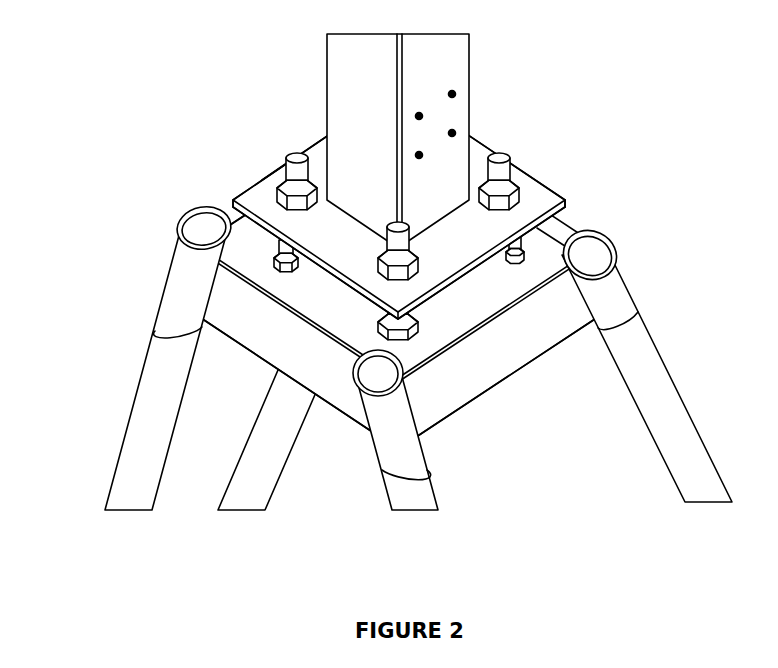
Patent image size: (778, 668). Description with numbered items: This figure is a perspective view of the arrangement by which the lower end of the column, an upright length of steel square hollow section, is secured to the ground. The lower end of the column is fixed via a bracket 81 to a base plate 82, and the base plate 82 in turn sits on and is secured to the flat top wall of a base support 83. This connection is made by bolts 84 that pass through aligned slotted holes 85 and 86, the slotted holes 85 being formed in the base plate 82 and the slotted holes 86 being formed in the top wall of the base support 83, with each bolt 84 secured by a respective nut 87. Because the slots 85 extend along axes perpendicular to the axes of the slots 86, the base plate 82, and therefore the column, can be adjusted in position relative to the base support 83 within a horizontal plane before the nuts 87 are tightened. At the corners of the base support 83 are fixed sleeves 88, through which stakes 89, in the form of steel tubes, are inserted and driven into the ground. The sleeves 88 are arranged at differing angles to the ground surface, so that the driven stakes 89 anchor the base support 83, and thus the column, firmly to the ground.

The bracket 81 is at (452, 103).
The base plate 82 is at (537, 180).
The base support 83 is at (497, 348).
The bolt 84 is at (497, 160).
The slotted hole 85 is at (566, 201).
The slotted hole 86 is at (538, 228).
The nut 87 is at (270, 176).
The sleeve 88 is at (157, 288).
The stake 89 is at (132, 472).